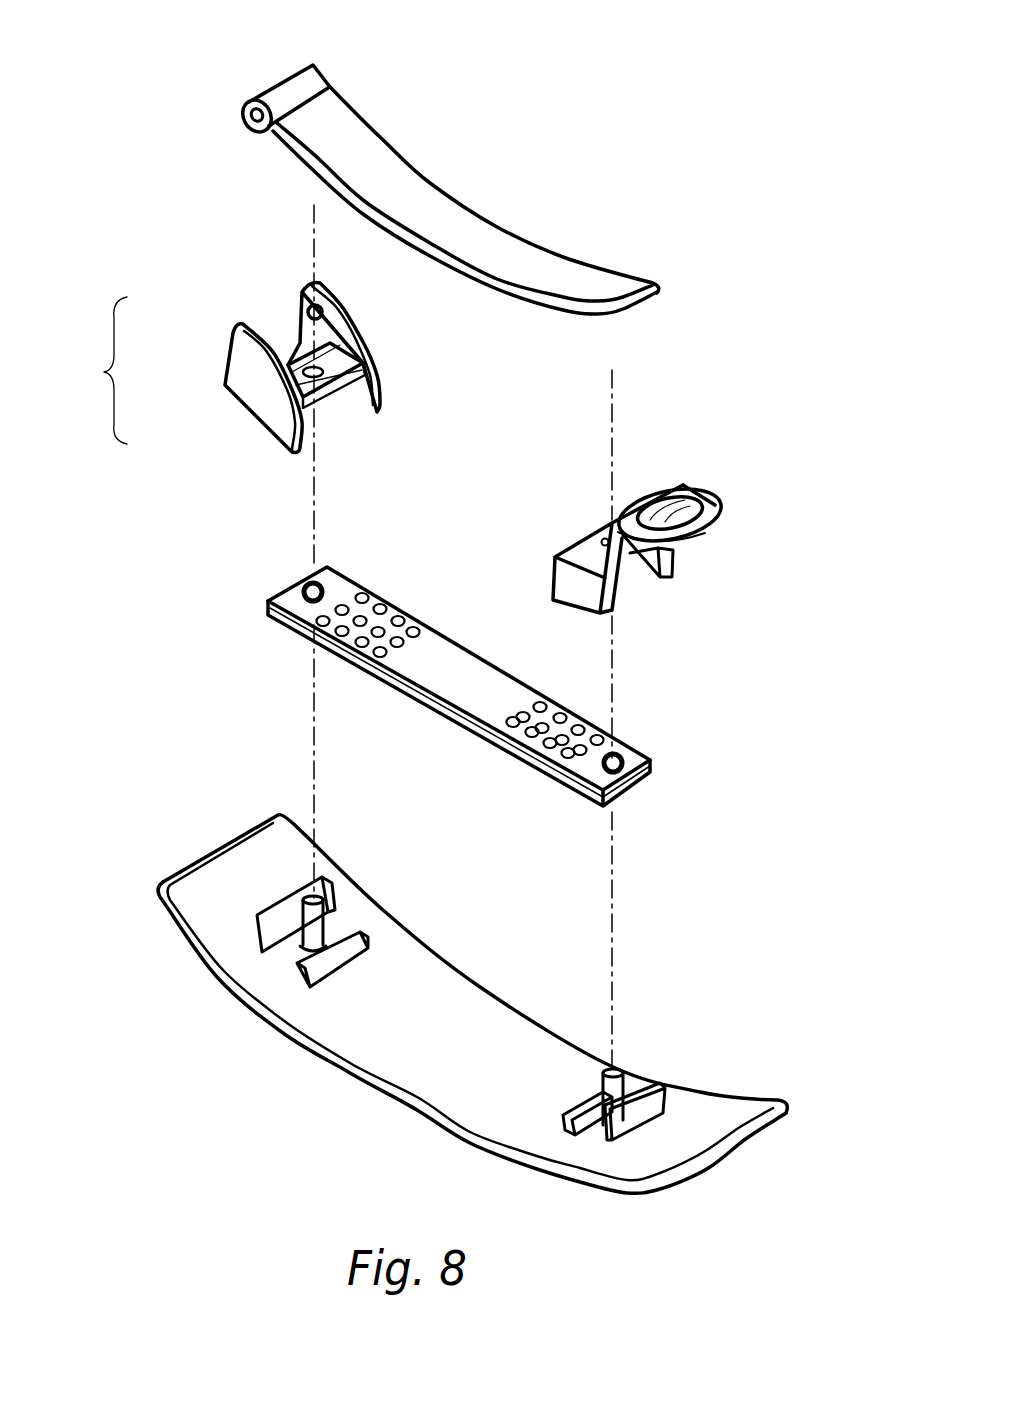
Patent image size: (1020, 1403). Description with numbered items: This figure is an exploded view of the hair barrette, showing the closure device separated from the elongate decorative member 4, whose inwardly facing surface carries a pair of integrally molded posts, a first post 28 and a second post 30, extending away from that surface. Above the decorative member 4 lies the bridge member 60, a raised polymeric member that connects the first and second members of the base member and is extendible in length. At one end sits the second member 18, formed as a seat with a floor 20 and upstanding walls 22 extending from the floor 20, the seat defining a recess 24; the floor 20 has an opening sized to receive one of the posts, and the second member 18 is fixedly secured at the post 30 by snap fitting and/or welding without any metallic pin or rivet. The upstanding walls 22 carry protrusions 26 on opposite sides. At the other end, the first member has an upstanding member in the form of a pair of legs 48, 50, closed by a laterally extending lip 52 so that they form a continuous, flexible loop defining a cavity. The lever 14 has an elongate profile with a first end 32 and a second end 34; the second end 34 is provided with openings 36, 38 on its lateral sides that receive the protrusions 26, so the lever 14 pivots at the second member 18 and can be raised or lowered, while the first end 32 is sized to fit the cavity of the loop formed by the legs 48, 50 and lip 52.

The decorative member 4 is at (460, 970).
The lever 14 is at (410, 187).
The second member 18 is at (98, 370).
The floor 20 is at (365, 378).
The upstanding walls 22 is at (340, 338).
The recess 24 is at (285, 330).
The protrusions 26 is at (322, 310).
The first post 28 is at (620, 1067).
The second post 30 is at (313, 923).
The first end 32 is at (667, 262).
The second end 34 is at (350, 63).
The opening 36 is at (325, 72).
The opening 38 is at (254, 113).
The leg 48 is at (617, 573).
The leg 50 is at (675, 558).
The lip 52 is at (700, 493).
The bridge member 60 is at (437, 667).